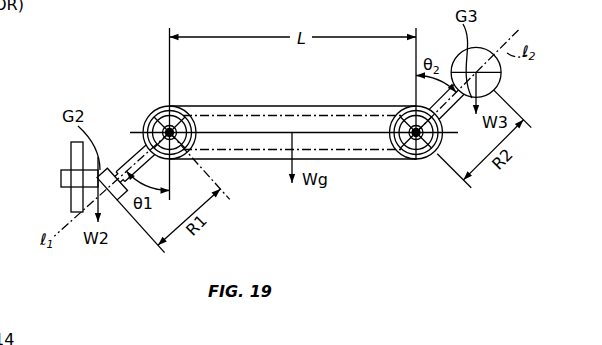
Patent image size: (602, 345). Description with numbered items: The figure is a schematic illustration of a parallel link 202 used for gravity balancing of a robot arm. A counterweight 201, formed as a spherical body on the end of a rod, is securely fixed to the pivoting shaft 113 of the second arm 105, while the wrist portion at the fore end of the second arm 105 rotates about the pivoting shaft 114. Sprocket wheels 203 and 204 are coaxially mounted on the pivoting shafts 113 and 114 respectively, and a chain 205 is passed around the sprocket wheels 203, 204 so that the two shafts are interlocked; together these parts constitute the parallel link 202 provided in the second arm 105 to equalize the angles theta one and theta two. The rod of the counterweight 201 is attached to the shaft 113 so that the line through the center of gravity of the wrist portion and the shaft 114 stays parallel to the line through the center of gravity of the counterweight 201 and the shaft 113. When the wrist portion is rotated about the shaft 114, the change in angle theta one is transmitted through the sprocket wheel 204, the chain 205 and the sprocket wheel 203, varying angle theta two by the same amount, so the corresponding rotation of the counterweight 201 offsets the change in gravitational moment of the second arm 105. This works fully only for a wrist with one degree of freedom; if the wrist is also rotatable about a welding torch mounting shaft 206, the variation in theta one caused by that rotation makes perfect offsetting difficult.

The second arm 105 is at (275, 160).
The pivoting shaft 113 is at (412, 162).
The pivoting shaft 114 is at (160, 110).
The counterweight 201 is at (502, 74).
The parallel link 202 is at (357, 160).
The sprocket wheel 203 is at (408, 117).
The sprocket wheel 204 is at (178, 107).
The chain 205 is at (236, 114).
The welding torch mounting shaft 206 is at (128, 159).